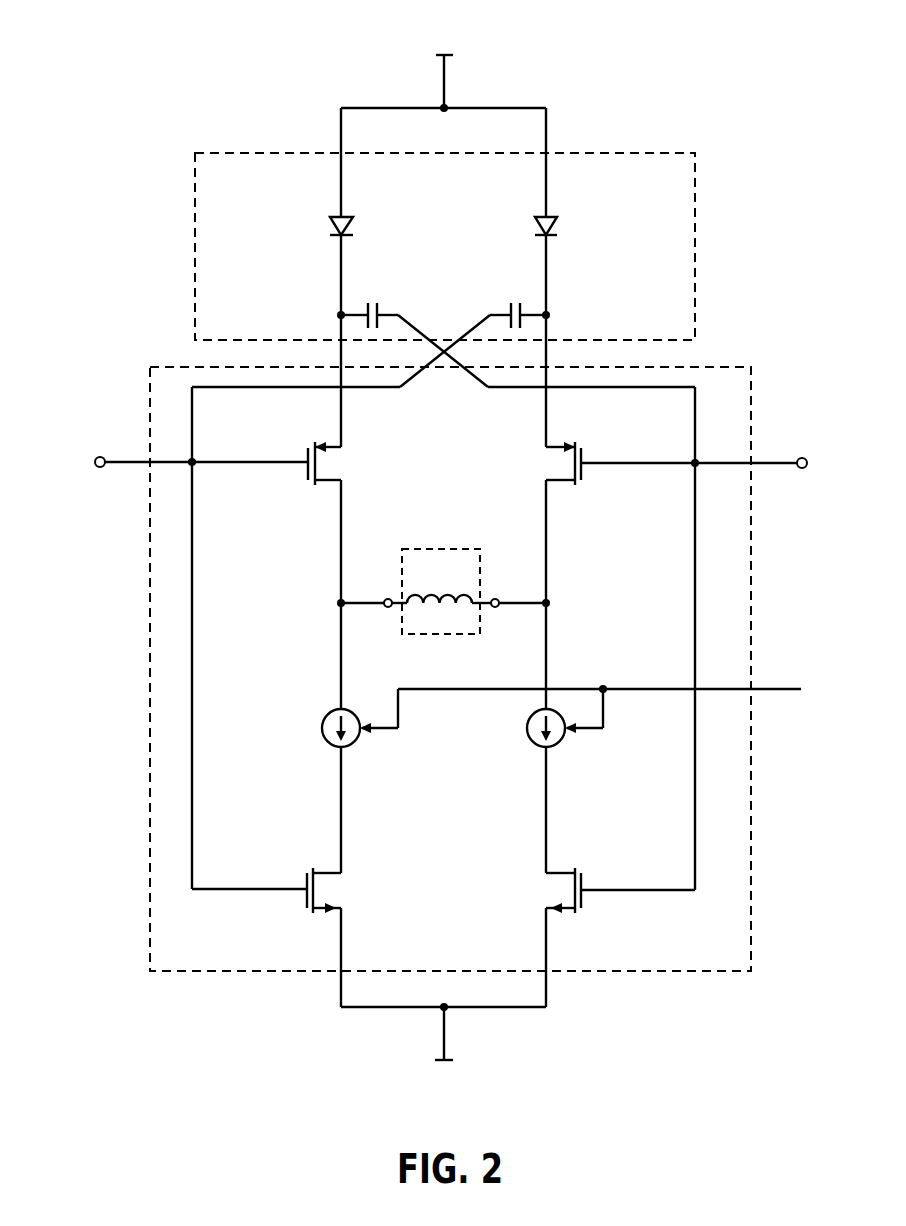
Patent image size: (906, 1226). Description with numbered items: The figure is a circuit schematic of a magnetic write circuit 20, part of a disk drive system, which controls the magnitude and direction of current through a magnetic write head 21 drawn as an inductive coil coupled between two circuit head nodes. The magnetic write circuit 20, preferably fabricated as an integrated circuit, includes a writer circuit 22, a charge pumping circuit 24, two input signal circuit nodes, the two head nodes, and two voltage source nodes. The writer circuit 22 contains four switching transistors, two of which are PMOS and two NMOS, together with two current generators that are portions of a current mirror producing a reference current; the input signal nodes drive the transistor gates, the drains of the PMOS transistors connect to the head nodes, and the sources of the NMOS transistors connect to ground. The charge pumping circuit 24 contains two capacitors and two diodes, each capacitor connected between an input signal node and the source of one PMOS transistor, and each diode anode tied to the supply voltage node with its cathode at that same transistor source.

The magnetic write circuit 20 is at (224, 79).
The magnetic write head 21 is at (452, 548).
The writer circuit 22 is at (150, 675).
The charge pumping circuit 24 is at (636, 153).